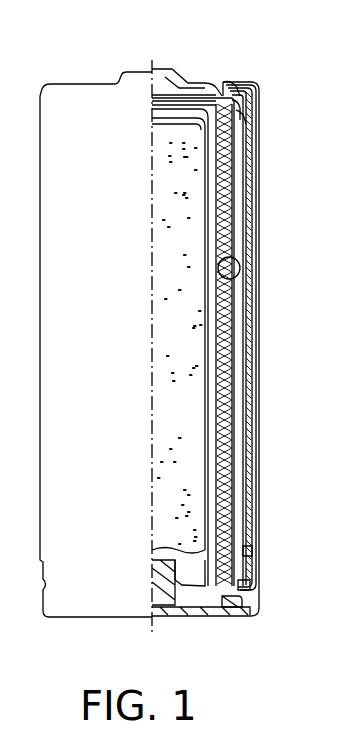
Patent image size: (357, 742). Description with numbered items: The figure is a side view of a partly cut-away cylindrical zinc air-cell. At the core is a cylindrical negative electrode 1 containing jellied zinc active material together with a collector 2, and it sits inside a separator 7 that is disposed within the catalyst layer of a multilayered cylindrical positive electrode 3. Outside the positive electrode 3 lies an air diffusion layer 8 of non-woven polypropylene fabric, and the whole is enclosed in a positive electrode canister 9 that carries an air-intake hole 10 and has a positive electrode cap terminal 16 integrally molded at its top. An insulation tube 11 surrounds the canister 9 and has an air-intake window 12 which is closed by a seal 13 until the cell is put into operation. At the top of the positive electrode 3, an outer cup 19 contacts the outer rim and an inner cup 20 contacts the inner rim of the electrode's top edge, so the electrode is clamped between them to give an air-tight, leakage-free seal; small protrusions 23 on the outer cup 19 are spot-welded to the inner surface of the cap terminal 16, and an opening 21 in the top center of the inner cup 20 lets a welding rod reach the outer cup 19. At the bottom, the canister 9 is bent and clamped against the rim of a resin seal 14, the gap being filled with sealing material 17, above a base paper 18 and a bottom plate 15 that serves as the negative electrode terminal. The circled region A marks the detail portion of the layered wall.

The cylindrical negative electrode 1 is at (232, 440).
The collector 2 is at (151, 620).
The multilayered cylindrical positive electrode 3 is at (232, 515).
The separator 7 is at (232, 470).
The air diffusion layer 8 is at (244, 392).
The positive electrode canister 9 is at (246, 352).
The air-intake hole 10 is at (253, 318).
The insulation tube 11 is at (253, 293).
The air-intake window 12 is at (250, 226).
The seal 13 is at (261, 165).
The seal made of resin 14 is at (236, 615).
The bottom plate for negative electrode terminal 15 is at (192, 620).
The positive electrode cap terminal 16 is at (157, 108).
The sealing material 17 is at (247, 587).
The base paper 18 is at (160, 96).
The outer cup 19 is at (237, 104).
The inner cup 20 is at (248, 126).
The opening 21 is at (184, 94).
The small protrusions 23 is at (223, 110).
The detail portion A is at (240, 268).